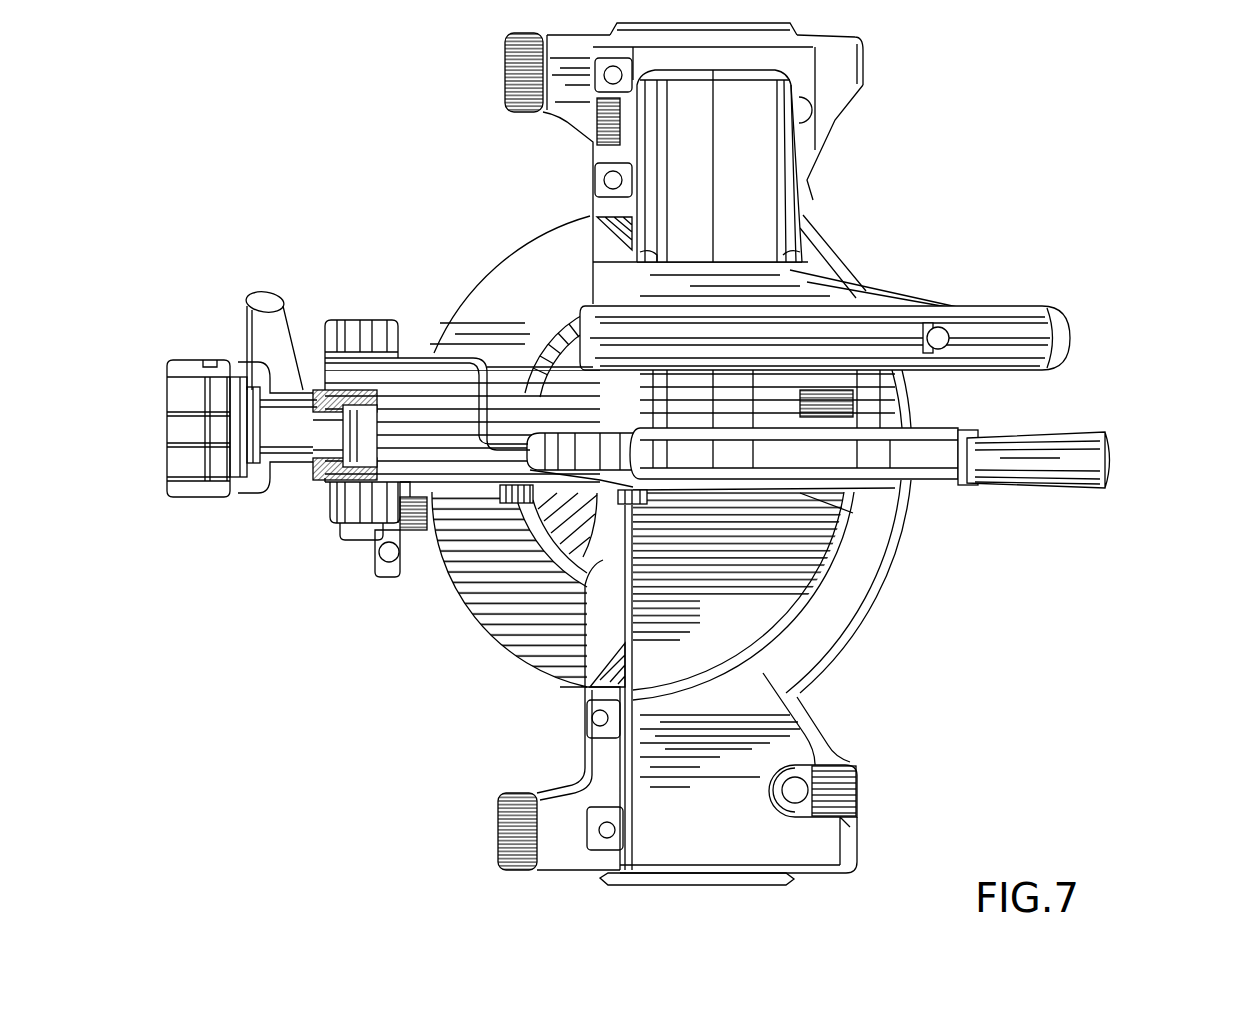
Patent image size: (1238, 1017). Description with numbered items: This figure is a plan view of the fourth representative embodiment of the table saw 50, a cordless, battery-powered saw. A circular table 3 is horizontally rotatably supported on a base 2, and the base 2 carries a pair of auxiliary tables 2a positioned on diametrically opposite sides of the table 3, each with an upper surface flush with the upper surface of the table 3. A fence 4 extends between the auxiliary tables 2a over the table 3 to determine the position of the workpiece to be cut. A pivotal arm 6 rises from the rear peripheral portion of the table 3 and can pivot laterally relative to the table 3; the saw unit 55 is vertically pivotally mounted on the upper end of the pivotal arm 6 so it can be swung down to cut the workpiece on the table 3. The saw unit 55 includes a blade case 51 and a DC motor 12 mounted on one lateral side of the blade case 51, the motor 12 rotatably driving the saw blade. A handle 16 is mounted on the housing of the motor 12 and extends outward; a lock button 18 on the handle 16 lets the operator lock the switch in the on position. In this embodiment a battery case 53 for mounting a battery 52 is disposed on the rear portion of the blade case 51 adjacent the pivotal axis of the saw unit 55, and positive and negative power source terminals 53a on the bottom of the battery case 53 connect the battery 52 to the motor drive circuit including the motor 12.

The base 2 is at (852, 593).
The auxiliary tables 2a is at (707, 62).
The circular table 3 is at (777, 552).
The fence 4 is at (588, 570).
The pivotal arm 6 is at (353, 523).
The DC motor 12 is at (765, 180).
The handle 16 is at (1033, 323).
The lock button 18 is at (945, 328).
The table saw 50 is at (865, 675).
The blade case 51 is at (913, 443).
The battery 52 is at (183, 398).
The battery case 53 is at (278, 376).
The power source terminals 53a is at (327, 407).
The saw unit 55 is at (880, 243).